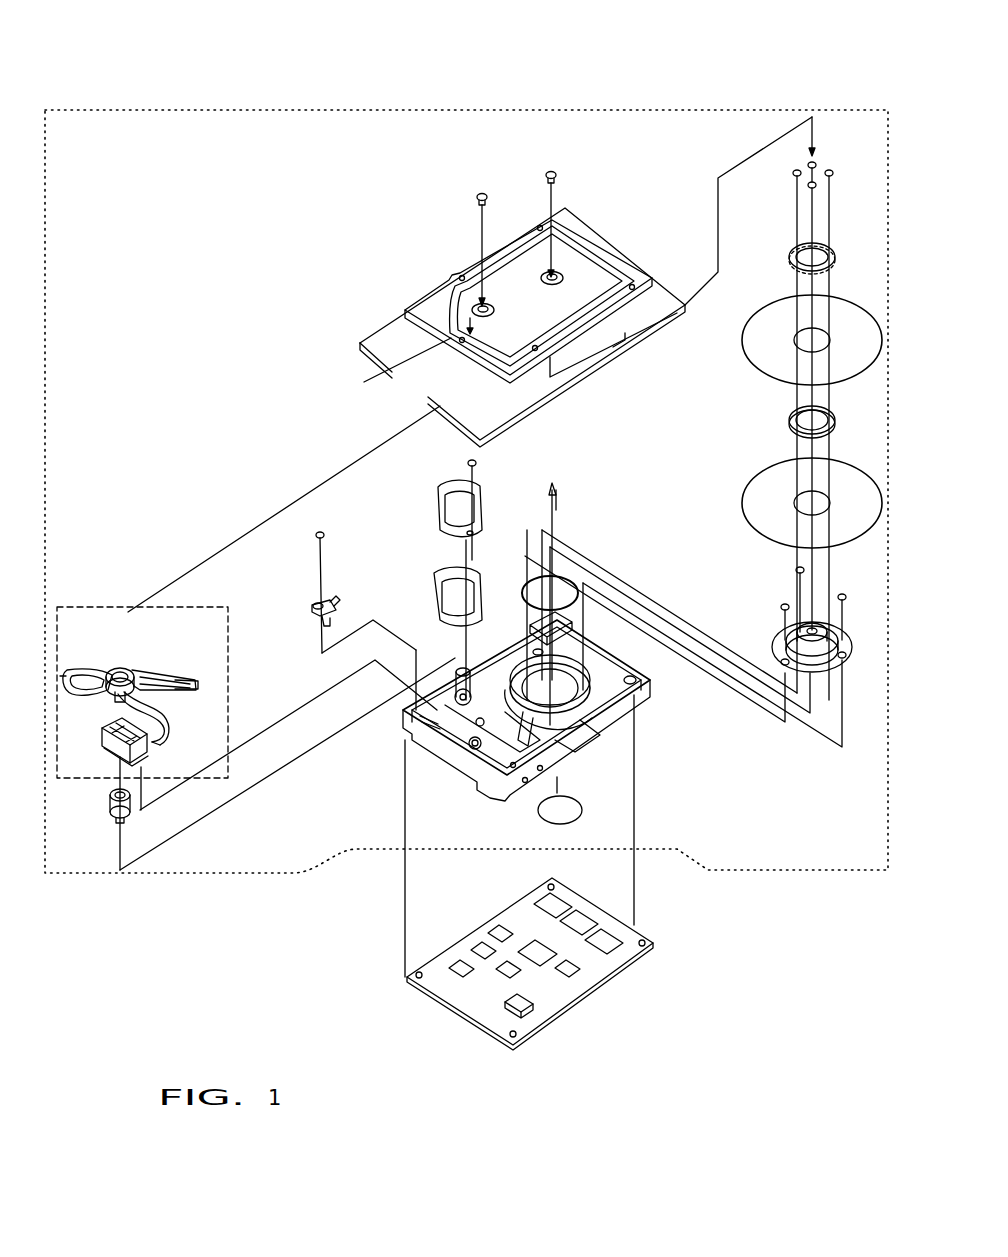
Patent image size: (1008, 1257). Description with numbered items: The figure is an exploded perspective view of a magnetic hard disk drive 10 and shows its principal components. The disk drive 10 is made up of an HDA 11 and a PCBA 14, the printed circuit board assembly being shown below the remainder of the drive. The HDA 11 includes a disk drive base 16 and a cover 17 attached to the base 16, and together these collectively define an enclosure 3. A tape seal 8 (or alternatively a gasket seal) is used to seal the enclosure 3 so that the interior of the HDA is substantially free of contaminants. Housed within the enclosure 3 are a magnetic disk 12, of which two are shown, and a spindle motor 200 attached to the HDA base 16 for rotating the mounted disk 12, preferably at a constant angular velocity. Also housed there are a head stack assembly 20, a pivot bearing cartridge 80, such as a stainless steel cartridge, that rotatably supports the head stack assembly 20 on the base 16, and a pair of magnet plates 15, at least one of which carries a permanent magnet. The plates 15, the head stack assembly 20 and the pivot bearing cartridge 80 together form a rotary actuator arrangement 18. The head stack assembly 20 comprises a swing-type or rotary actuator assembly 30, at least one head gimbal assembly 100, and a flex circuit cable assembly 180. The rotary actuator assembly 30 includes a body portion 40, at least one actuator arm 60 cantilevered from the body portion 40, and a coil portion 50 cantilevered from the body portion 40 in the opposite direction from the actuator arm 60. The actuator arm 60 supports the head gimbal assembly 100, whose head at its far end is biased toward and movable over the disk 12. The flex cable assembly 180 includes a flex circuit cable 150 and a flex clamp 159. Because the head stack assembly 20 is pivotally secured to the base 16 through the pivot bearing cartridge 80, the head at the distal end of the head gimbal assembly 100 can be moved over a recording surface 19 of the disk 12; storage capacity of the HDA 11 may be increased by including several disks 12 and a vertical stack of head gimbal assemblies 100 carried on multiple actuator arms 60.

The magnetic hard disk drive 10 is at (282, 78).
The HDA 11 is at (735, 874).
The enclosure 3 is at (442, 677).
The tape seal 8 is at (579, 380).
The cover 17 is at (429, 286).
The rotary actuator arrangement 18 is at (388, 483).
The recording surface 19 is at (776, 332).
The magnetic disk 12 is at (748, 478).
The spindle motor 200 is at (775, 640).
The magnet plates 15 is at (478, 606).
The disk drive base 16 is at (641, 705).
The PCBA 14 is at (580, 998).
The head stack assembly 20 is at (94, 605).
The rotary actuator assembly 30 is at (160, 642).
The body portion 40 is at (118, 668).
The coil portion 50 is at (94, 700).
The actuator arm 60 is at (144, 674).
The head gimbal assembly 100 is at (195, 682).
The flex circuit cable 150 is at (165, 722).
The flex circuit cable assembly 180 is at (168, 744).
The flex clamp 159 is at (148, 757).
The pivot bearing cartridge 80 is at (110, 808).